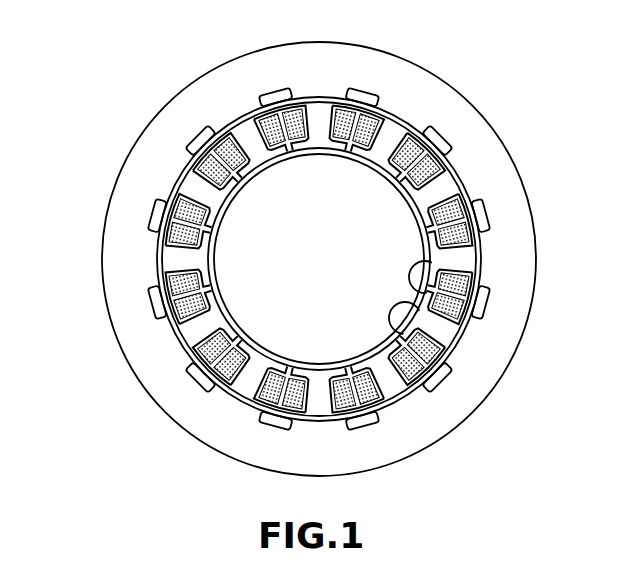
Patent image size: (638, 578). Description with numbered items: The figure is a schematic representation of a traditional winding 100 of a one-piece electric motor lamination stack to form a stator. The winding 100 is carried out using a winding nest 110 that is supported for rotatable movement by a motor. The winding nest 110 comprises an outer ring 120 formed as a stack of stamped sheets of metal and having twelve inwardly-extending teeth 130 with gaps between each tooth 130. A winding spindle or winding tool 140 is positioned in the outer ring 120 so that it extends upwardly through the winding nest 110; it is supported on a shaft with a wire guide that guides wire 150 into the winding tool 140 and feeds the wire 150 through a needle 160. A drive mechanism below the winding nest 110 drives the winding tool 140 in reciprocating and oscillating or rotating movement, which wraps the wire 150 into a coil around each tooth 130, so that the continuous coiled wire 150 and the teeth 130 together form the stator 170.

The winding 100 is at (527, 112).
The winding nest 110 is at (522, 345).
The outer ring 120 is at (405, 407).
The teeth 130 is at (412, 312).
The winding tool 140 is at (258, 283).
The wire 150 is at (470, 280).
The needle 160 is at (386, 116).
The stator 170 is at (325, 270).